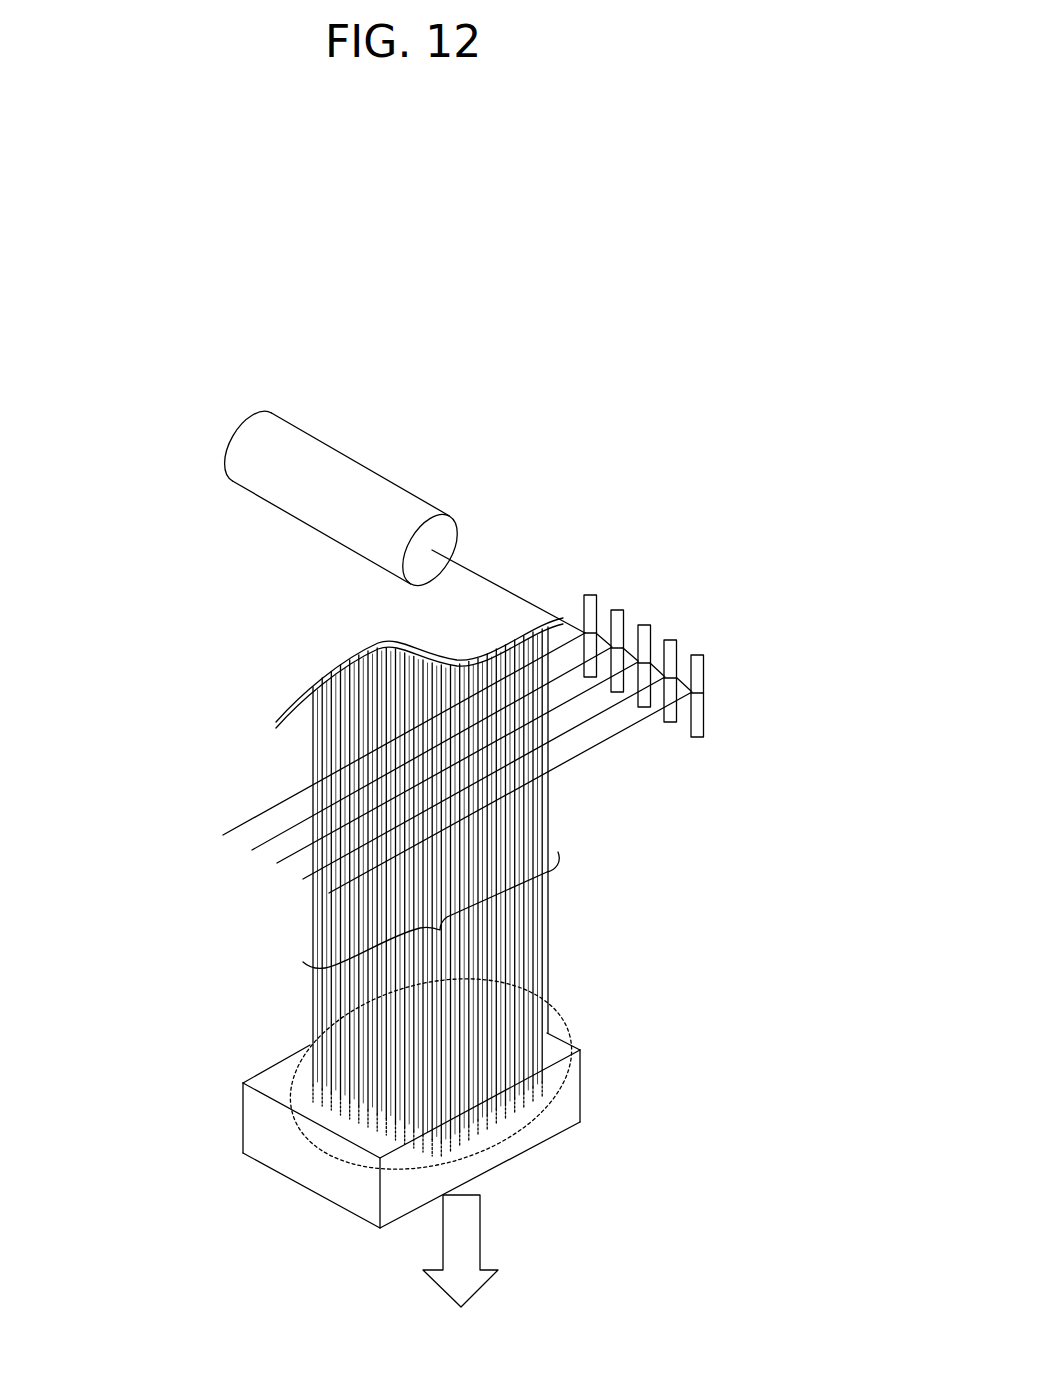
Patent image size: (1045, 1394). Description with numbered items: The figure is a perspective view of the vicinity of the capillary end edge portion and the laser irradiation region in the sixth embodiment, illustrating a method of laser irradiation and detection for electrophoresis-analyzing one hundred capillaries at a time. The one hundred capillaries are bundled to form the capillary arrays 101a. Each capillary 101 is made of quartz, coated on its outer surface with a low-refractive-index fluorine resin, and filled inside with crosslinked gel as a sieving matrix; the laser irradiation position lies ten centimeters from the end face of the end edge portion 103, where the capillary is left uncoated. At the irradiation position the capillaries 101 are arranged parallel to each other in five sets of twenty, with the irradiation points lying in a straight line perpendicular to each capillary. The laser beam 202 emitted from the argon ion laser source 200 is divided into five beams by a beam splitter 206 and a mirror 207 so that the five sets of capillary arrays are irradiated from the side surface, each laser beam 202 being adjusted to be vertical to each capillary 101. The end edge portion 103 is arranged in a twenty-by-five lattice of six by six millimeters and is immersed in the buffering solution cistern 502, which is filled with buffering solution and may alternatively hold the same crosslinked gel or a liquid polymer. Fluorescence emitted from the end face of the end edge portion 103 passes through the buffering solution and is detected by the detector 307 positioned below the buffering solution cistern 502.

The argon ion laser source 200 is at (387, 480).
The beam splitter 206 is at (590, 595).
The mirror 207 is at (703, 690).
The laser beam 202 is at (610, 738).
The capillary 101 is at (545, 838).
The capillary arrays 101a is at (447, 943).
The end edge portion 103 is at (568, 1027).
The buffering solution cistern 502 is at (267, 1148).
The detector 307 is at (465, 1272).